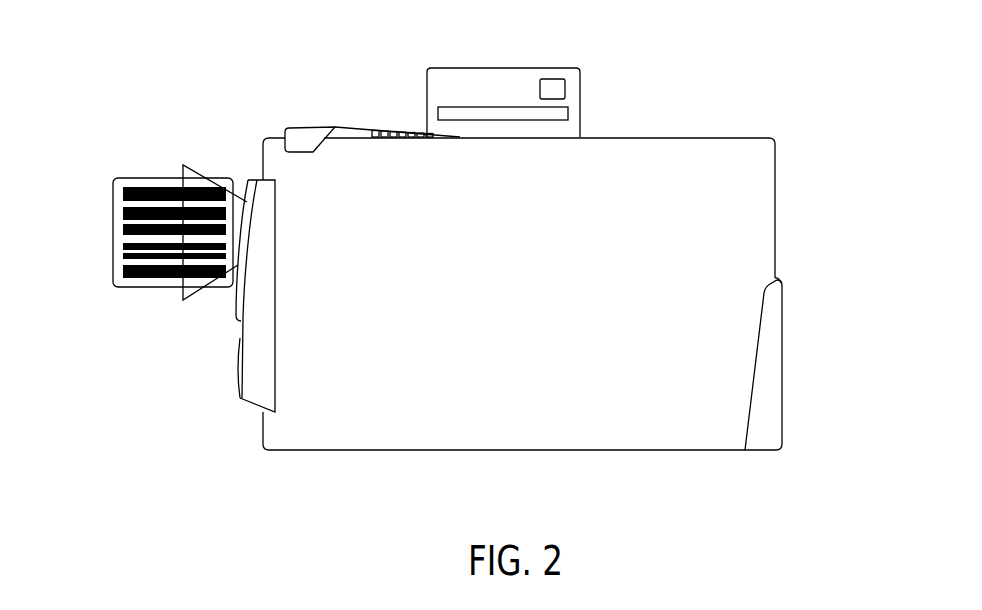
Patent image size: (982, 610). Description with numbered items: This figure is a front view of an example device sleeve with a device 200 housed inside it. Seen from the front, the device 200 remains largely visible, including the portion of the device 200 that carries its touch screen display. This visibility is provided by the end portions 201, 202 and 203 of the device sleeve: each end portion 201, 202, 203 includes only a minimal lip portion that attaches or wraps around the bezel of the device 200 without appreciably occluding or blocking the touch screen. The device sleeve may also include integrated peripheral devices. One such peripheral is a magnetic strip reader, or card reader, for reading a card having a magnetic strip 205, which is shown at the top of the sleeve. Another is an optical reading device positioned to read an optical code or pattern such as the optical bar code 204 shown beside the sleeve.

The device 200 is at (668, 155).
The end portion 201 is at (340, 132).
The end portion 202 is at (260, 378).
The end portion 203 is at (765, 410).
The optical bar code 204 is at (150, 177).
The card having a magnetic strip 205 is at (497, 75).